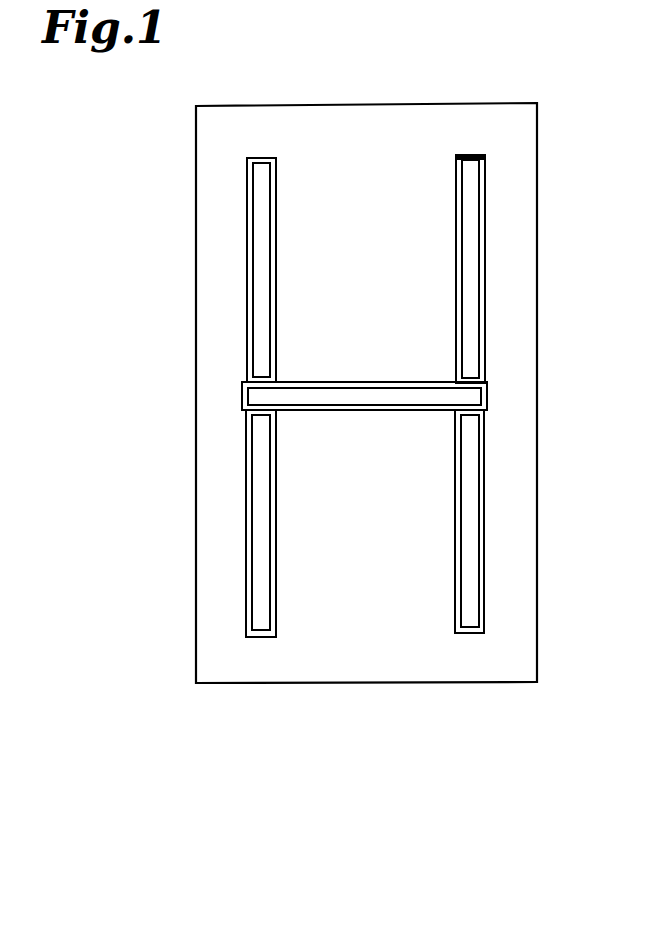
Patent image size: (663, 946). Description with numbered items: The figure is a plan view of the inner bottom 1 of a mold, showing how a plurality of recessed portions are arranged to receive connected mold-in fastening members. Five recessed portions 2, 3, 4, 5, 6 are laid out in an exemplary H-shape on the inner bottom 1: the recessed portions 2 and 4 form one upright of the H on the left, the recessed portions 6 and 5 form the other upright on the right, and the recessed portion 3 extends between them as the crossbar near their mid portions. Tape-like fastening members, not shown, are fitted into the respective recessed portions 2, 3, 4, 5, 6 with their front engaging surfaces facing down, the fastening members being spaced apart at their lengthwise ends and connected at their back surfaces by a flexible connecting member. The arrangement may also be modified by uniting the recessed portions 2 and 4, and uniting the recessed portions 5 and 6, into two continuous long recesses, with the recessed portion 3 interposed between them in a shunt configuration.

The inner bottom of the mold 1 is at (523, 179).
The recessed portion 2 is at (261, 296).
The recessed portion 3 is at (346, 398).
The recessed portion 4 is at (259, 530).
The recessed portion 5 is at (470, 527).
The recessed portion 6 is at (472, 262).